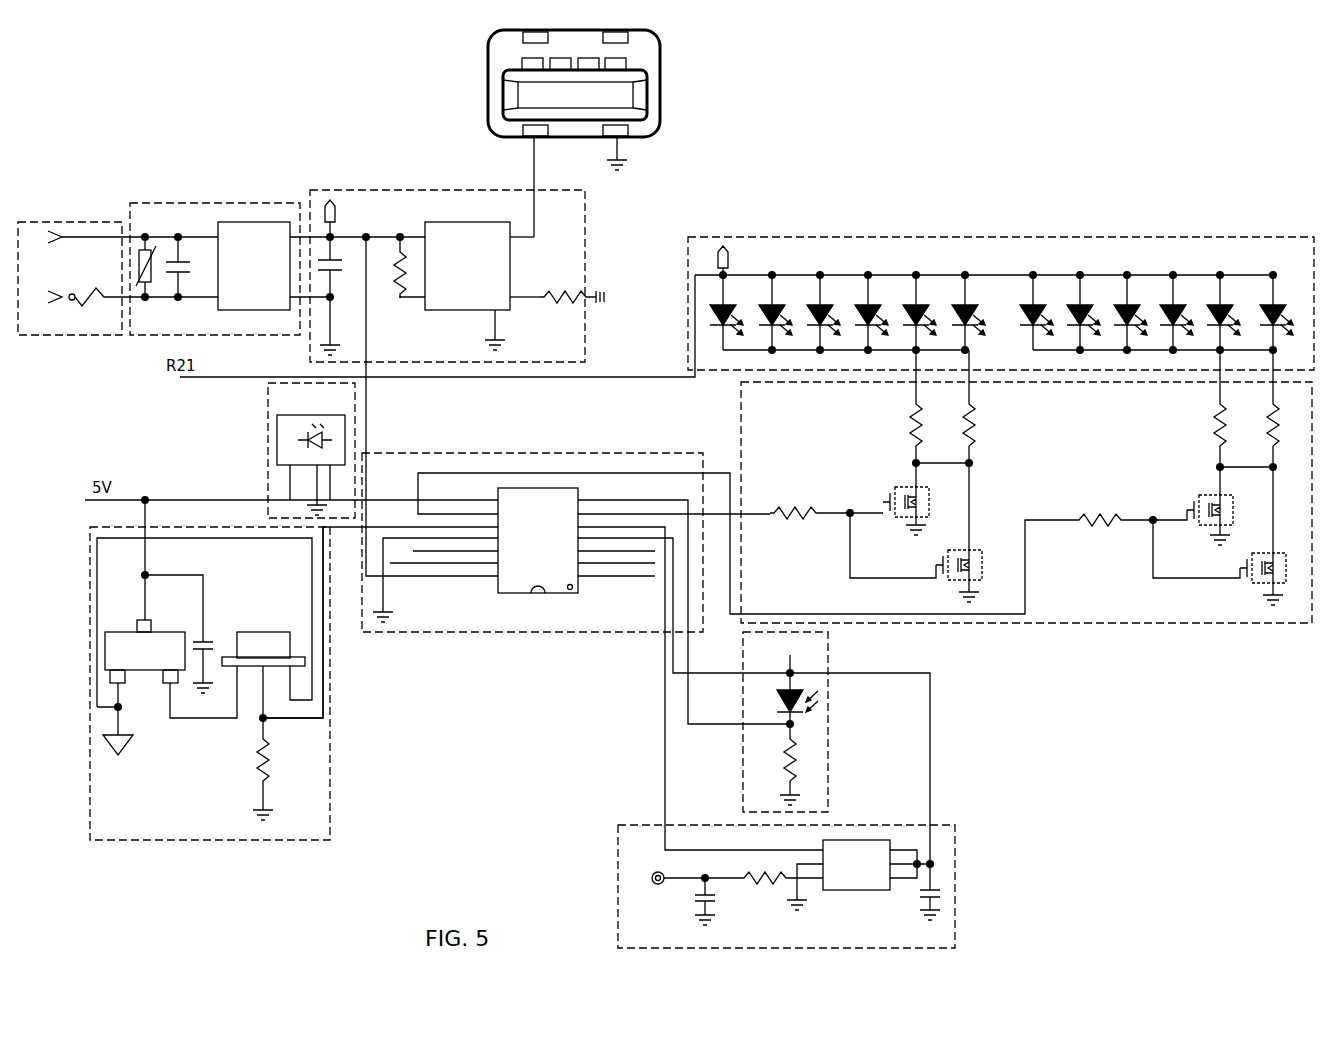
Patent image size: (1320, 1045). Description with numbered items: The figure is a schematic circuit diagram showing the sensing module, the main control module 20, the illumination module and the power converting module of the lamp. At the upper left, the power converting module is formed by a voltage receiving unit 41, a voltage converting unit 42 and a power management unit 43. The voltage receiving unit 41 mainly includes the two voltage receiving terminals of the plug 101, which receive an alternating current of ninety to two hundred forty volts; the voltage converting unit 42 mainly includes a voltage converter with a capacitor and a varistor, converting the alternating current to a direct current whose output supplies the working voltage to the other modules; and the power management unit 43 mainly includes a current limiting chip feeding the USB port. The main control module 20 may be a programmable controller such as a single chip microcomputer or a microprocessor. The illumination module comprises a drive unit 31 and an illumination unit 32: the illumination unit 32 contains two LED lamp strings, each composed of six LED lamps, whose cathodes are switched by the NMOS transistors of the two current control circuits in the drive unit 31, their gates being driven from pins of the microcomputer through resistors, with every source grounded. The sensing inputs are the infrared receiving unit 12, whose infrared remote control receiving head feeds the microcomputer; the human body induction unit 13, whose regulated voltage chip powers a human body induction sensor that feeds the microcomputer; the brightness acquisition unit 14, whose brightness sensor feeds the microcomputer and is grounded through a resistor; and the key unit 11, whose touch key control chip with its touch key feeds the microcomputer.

The plug 101 is at (490, 43).
The voltage receiving unit 41 is at (18, 233).
The voltage converting unit 42 is at (130, 211).
The power management unit 43 is at (312, 197).
The illumination unit 32 is at (688, 237).
The drive unit 31 is at (741, 426).
The infrared receiving unit 12 is at (270, 451).
The main control module 20 is at (446, 457).
The human body induction unit 13 is at (330, 799).
The brightness acquisition unit 14 is at (830, 665).
The key unit 11 is at (955, 839).